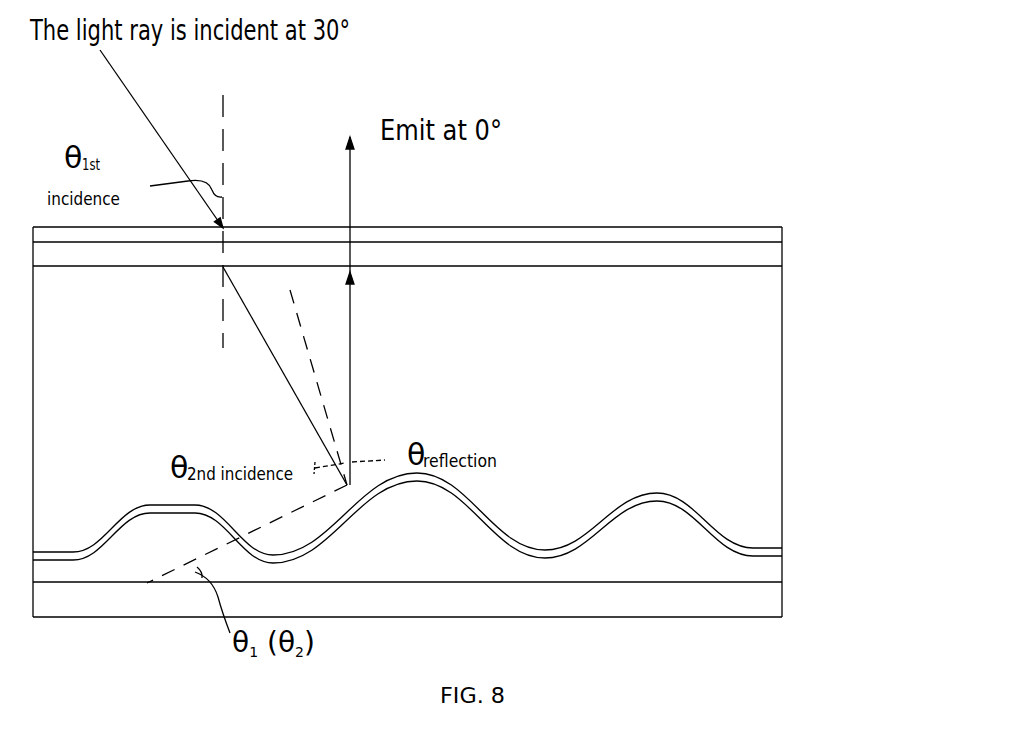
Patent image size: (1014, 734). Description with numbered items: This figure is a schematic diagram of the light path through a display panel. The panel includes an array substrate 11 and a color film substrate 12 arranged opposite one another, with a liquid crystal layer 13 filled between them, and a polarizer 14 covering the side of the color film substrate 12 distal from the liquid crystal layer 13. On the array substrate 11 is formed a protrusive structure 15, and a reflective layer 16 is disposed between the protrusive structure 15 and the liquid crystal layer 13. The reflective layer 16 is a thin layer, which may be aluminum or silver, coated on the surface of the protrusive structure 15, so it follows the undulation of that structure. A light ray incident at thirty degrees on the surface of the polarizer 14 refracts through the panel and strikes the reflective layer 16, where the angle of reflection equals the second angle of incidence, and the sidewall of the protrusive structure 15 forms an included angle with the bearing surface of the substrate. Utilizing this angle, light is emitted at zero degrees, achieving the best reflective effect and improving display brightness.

The array substrate 11 is at (767, 607).
The color film substrate 12 is at (760, 257).
The liquid crystal layer 13 is at (765, 385).
The polarizer 14 is at (765, 237).
The protrusive structure 15 is at (715, 565).
The reflective layer 16 is at (750, 548).